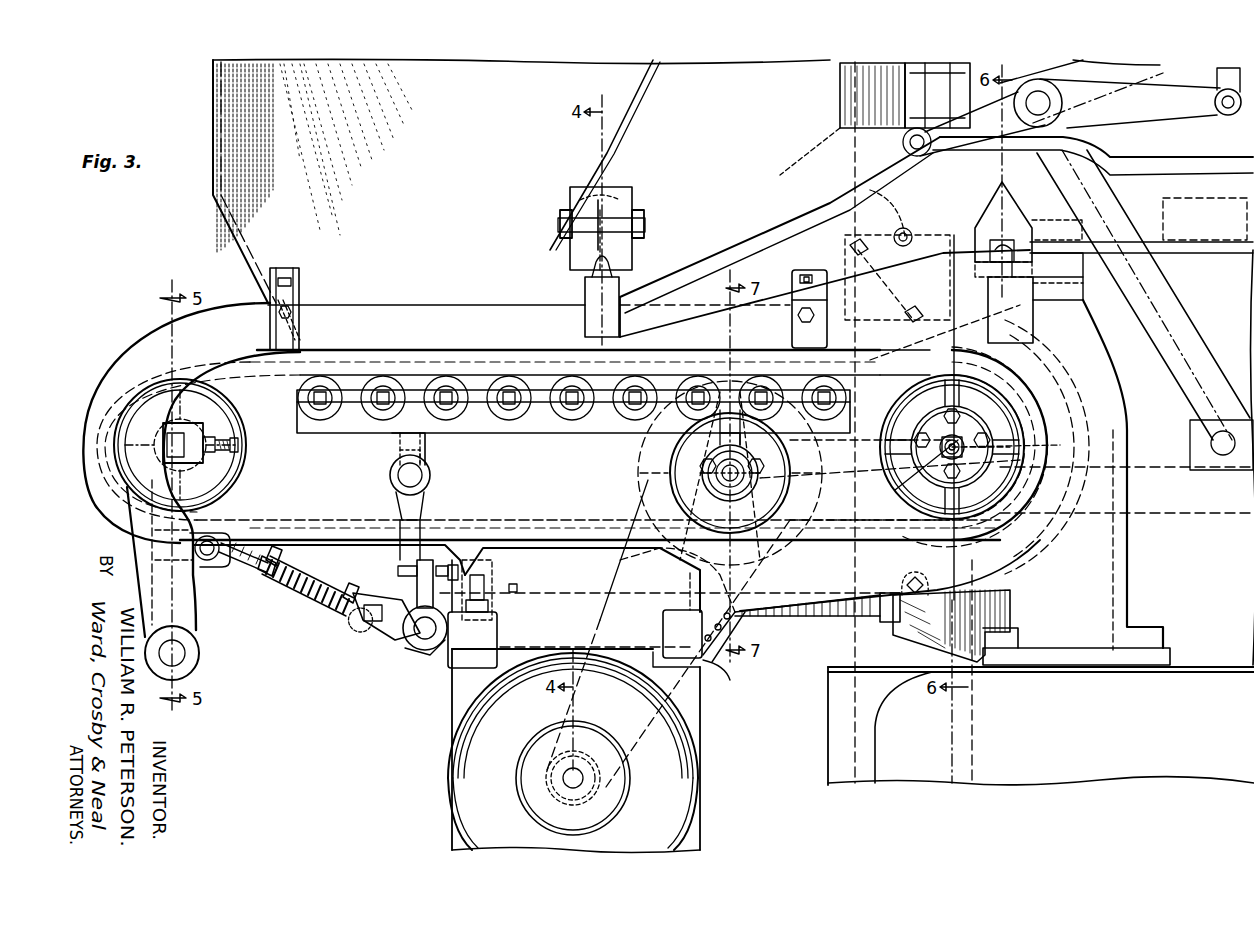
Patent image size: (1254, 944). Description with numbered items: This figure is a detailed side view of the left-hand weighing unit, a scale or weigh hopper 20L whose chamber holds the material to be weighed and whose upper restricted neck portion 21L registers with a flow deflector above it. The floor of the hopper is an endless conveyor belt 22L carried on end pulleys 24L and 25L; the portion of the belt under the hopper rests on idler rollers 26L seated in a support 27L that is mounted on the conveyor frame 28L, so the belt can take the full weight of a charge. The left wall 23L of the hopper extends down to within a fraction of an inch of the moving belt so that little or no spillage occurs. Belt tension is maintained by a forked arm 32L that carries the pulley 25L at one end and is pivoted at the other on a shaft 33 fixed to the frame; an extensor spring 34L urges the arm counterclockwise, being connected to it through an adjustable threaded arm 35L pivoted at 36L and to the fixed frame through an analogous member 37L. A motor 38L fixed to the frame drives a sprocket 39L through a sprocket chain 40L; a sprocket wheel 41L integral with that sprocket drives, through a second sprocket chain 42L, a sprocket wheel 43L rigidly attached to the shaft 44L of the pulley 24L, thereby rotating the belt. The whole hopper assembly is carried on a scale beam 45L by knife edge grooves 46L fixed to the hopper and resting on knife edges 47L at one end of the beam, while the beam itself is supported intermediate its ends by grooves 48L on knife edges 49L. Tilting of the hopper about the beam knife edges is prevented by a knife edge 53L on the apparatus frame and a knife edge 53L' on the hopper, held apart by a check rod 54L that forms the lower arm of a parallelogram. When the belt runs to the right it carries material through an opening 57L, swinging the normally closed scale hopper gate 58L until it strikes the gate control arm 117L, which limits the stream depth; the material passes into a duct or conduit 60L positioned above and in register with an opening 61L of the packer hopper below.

The scale or weigh hopper 20L is at (432, 144).
The upper restricted neck portion 21L is at (640, 108).
The conveyor belt 22L is at (142, 372).
The left wall 23L is at (312, 350).
The end pulley 24L is at (1020, 445).
The end pulley 25L is at (214, 425).
The idler rollers 26L is at (540, 420).
The support 27L is at (500, 433).
The conveyor frame 28L is at (410, 292).
The forked arm 32L is at (222, 485).
The shaft 33 is at (200, 658).
The extensor spring 34L is at (302, 610).
The adjustable threaded arm 35L is at (255, 578).
The pivot 36L is at (215, 580).
The member 37L is at (385, 620).
The motor 38L is at (682, 780).
The sprocket 39L is at (660, 458).
The sprocket chain 40L is at (716, 662).
The sprocket wheel 41L is at (716, 492).
The sprocket chain 42L is at (862, 400).
The sprocket wheel 43L is at (990, 425).
The shaft 44L is at (905, 484).
The scale beam 45L is at (1170, 180).
The knife edge grooves 46L is at (636, 218).
The knife edges 47L is at (580, 280).
The grooves 48L is at (1008, 226).
The knife edges 49L is at (1012, 270).
The knife edge 53L is at (897, 575).
The knife edge 53L' is at (487, 586).
The check rod 54L is at (800, 616).
The opening 57L is at (825, 270).
The scale hopper gate 58L is at (895, 308).
The duct or conduit 60L is at (1105, 566).
The opening 61L is at (1093, 672).
The gate control arm 117L is at (922, 130).